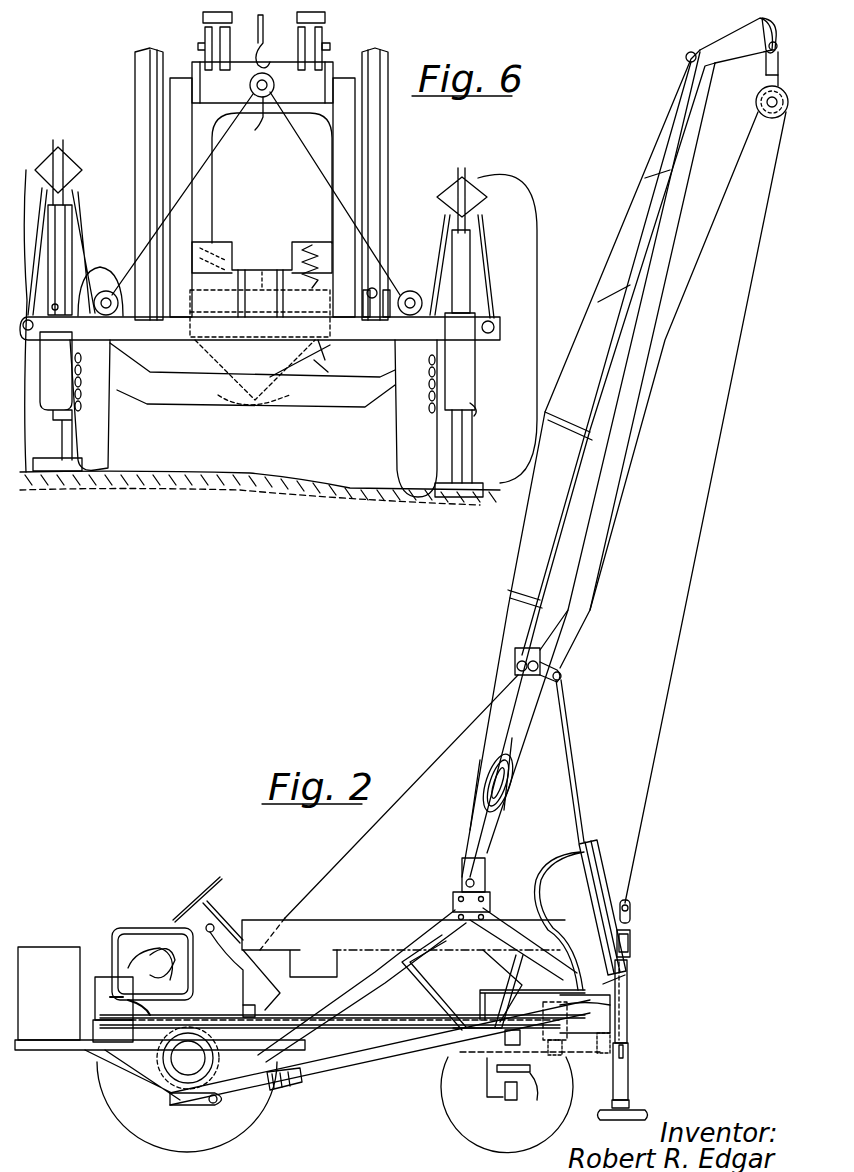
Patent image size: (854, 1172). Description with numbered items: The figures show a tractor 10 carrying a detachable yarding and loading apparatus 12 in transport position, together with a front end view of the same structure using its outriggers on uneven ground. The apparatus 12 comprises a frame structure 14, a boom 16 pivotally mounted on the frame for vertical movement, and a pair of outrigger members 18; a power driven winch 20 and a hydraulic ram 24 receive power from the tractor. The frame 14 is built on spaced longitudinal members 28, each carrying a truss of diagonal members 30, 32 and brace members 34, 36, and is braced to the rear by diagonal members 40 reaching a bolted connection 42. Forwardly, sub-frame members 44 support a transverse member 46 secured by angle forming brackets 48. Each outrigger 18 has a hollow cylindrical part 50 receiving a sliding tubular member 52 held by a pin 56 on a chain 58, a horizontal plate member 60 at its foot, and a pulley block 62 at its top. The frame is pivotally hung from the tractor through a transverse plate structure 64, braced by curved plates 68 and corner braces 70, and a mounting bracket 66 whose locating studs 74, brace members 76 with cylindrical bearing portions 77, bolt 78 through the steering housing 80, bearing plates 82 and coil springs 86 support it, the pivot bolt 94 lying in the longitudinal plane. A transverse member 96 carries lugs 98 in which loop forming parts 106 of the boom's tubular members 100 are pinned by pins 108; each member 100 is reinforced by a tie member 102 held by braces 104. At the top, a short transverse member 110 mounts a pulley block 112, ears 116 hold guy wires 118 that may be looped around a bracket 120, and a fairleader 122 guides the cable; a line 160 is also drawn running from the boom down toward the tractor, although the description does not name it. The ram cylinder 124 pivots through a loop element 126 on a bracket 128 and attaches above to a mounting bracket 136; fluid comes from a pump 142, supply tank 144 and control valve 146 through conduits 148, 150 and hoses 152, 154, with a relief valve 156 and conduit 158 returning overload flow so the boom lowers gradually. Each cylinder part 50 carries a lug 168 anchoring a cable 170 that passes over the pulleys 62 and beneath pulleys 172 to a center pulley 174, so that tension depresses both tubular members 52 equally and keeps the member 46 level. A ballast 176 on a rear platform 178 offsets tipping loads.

In FIG. 6, the tractor 10 is at (271, 174).
In FIG. 2, the tractor 10 is at (367, 918).
In FIG. 2, the yarding and loading apparatus 12 is at (617, 447).
In FIG. 6, the frame structure 14 is at (130, 360).
In FIG. 2, the frame structure 14 is at (452, 955).
In FIG. 2, the boom 16 is at (694, 163).
In FIG. 2, the outrigger members 18 is at (632, 1068).
In FIG. 2, the power driven winch 20 is at (215, 1050).
In FIG. 2, the hydraulic ram 24 is at (605, 855).
In FIG. 2, the longitudinal frame members 28 is at (392, 1072).
In FIG. 2, the diagonal member 30 is at (378, 972).
In FIG. 6, the diagonal member 32 is at (181, 78).
In FIG. 2, the diagonal member 32 is at (492, 934).
In FIG. 2, the brace member 34 is at (415, 990).
In FIG. 2, the brace member 36 is at (510, 962).
In FIG. 2, the diagonal members 40 is at (296, 1090).
In FIG. 2, the bolted connection 42 is at (212, 1105).
In FIG. 2, the sub-frame members 44 is at (468, 1048).
In FIG. 6, the transverse member 46 is at (68, 345).
In FIG. 6, the angle forming brackets 48 is at (180, 335).
In FIG. 6, the hollow cylindrical part 50 is at (476, 364).
In FIG. 2, the hollow cylindrical part 50 is at (630, 1082).
In FIG. 6, the tubular member 52 is at (470, 248).
In FIG. 2, the tubular member 52 is at (630, 1100).
In FIG. 6, the pin 56 is at (478, 412).
In FIG. 6, the chain 58 is at (96, 400).
In FIG. 6, the horizontal plate member 60 is at (85, 466).
In FIG. 2, the horizontal plate member 60 is at (636, 1112).
In FIG. 6, the pulley block 62 is at (75, 160).
In FIG. 2, the pulley block 62 is at (632, 936).
In FIG. 6, the transverse plate structure 64 is at (280, 368).
In FIG. 6, the mounting bracket 66 is at (260, 282).
In FIG. 6, the curved plates 68 is at (335, 352).
In FIG. 6, the corner braces 70 is at (222, 242).
In FIG. 6, the locating studs 74 is at (260, 313).
In FIG. 2, the brace members 76 is at (532, 1072).
In FIG. 2, the cylindrical bearing portion 77 is at (530, 1085).
In FIG. 2, the bolt 78 is at (538, 1095).
In FIG. 6, the tractor steering housing 80 is at (215, 370).
In FIG. 2, the tractor steering housing 80 is at (490, 1097).
In FIG. 6, the bearing plates 82 is at (334, 370).
In FIG. 6, the coil spring 86 is at (300, 250).
In FIG. 6, the pivot bolt 94 is at (220, 392).
In FIG. 6, the transverse member 96 is at (264, 58).
In FIG. 2, the lugs 98 is at (486, 874).
In FIG. 2, the tubular members 100 is at (660, 228).
In FIG. 2, the tie member 102 is at (628, 212).
In FIG. 2, the braces 104 is at (530, 580).
In FIG. 6, the loop forming part 106 is at (203, 18).
In FIG. 6, the pin 108 is at (340, 41).
In FIG. 2, the pin 108 is at (486, 890).
In FIG. 2, the short transverse member 110 is at (778, 32).
In FIG. 2, the pulley block 112 is at (782, 88).
In FIG. 2, the ears 116 is at (685, 54).
In FIG. 2, the guy wires 118 is at (668, 150).
In FIG. 2, the bracket 120 is at (495, 748).
In FIG. 2, the fairleader 122 is at (514, 655).
In FIG. 6, the ram cylinder 124 is at (135, 88).
In FIG. 2, the ram cylinder 124 is at (600, 880).
In FIG. 6, the loop element 126 is at (110, 290).
In FIG. 2, the bracket 128 is at (595, 1055).
In FIG. 2, the mounting bracket 136 is at (562, 672).
In FIG. 2, the engine-driven pump 142 is at (146, 1072).
In FIG. 2, the supply tank 144 is at (92, 980).
In FIG. 2, the control valve 146 is at (172, 955).
In FIG. 2, the conduit 148 is at (402, 1013).
In FIG. 2, the conduit 150 is at (345, 1026).
In FIG. 2, the flexible hoses 152 is at (560, 885).
In FIG. 2, the hoses 154 is at (600, 1000).
In FIG. 2, the relief valve 156 is at (218, 972).
In FIG. 2, the conduit 158 is at (136, 926).
In FIG. 2, the cable 160 is at (332, 870).
In FIG. 6, the lug 168 is at (492, 320).
In FIG. 2, the lug 168 is at (626, 1050).
In FIG. 6, the cable 170 is at (80, 216).
In FIG. 6, the pulleys 172 is at (410, 290).
In FIG. 6, the pulley 174 is at (269, 117).
In FIG. 2, the pulley 174 is at (632, 910).
In FIG. 2, the ballast 176 is at (56, 946).
In FIG. 2, the platform 178 is at (40, 1052).